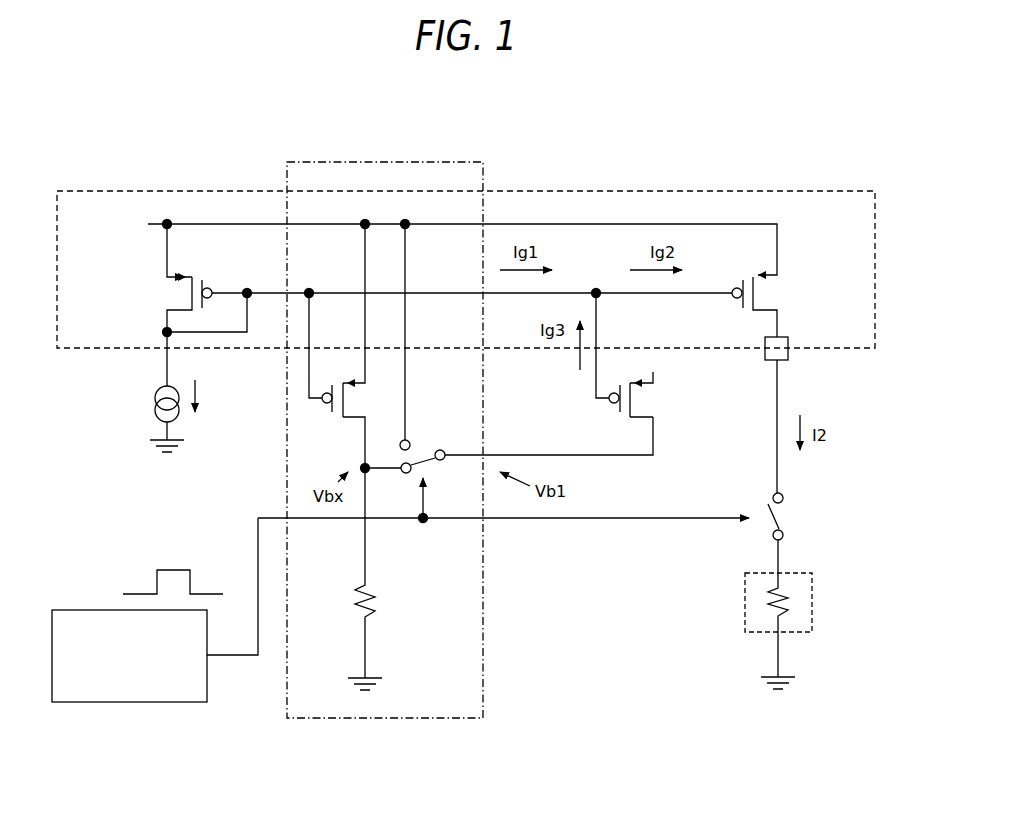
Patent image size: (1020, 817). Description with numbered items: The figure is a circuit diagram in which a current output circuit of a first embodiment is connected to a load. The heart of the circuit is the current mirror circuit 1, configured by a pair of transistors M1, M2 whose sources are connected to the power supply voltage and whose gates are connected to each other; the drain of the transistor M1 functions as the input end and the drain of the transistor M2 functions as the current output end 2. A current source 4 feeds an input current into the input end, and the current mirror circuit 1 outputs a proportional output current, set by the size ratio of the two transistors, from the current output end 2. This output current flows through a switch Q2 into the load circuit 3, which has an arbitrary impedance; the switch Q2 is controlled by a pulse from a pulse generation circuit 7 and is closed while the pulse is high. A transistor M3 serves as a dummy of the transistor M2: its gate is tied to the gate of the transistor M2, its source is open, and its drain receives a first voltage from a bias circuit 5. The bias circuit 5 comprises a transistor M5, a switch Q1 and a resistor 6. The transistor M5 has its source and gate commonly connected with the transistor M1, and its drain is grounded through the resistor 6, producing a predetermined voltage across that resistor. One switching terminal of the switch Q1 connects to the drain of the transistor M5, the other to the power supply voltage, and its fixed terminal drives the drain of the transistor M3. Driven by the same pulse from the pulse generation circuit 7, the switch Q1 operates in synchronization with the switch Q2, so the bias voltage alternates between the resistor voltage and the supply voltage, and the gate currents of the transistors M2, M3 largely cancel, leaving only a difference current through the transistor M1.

The current mirror circuit 1 is at (695, 190).
The current output end 2 is at (788, 352).
The load circuit 3 is at (812, 600).
The current source 4 is at (155, 395).
The bias circuit 5 is at (485, 565).
The resistor 6 is at (388, 605).
The pulse generation circuit 7 is at (135, 702).
The transistor M1 is at (165, 290).
The transistor M2 is at (778, 291).
The transistor M3 is at (655, 405).
The transistor M5 is at (318, 410).
The switch Q1 is at (425, 442).
The switch Q2 is at (790, 518).